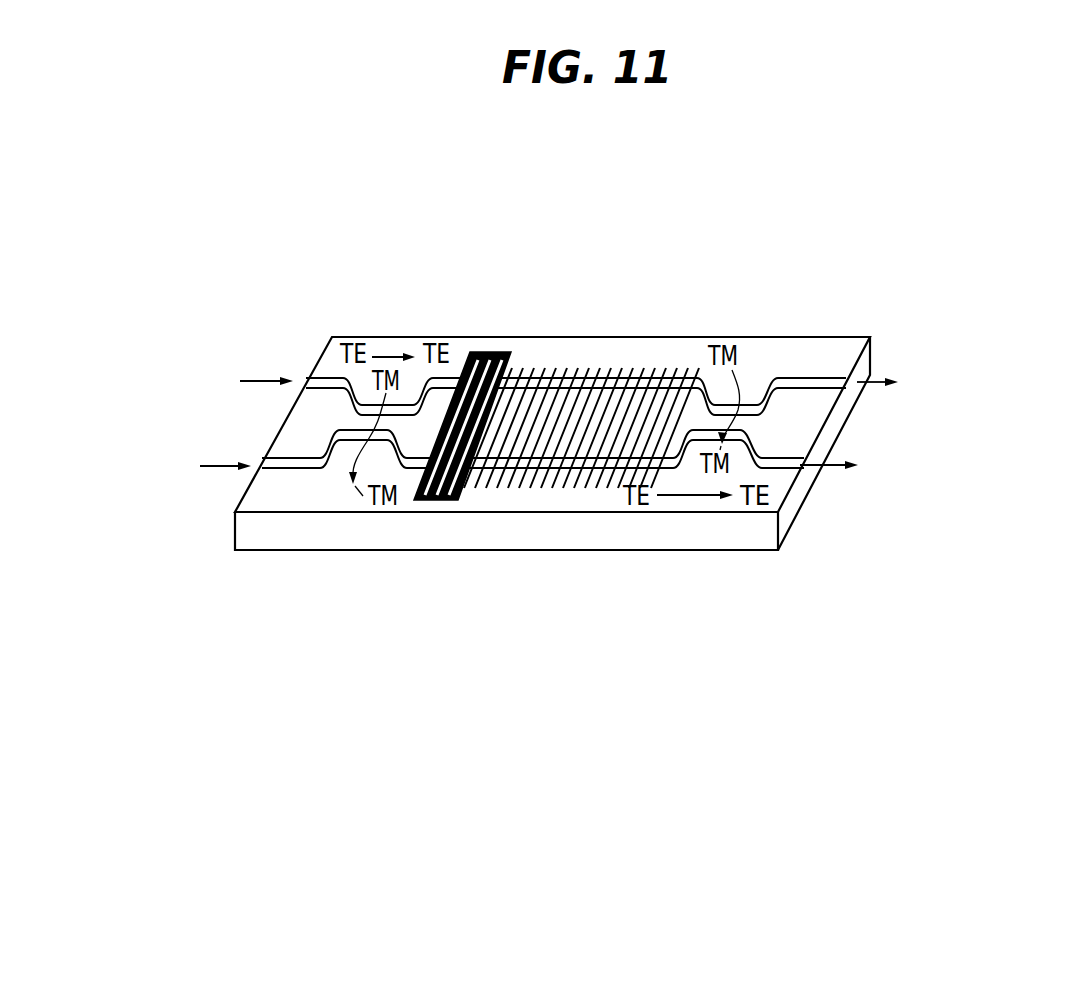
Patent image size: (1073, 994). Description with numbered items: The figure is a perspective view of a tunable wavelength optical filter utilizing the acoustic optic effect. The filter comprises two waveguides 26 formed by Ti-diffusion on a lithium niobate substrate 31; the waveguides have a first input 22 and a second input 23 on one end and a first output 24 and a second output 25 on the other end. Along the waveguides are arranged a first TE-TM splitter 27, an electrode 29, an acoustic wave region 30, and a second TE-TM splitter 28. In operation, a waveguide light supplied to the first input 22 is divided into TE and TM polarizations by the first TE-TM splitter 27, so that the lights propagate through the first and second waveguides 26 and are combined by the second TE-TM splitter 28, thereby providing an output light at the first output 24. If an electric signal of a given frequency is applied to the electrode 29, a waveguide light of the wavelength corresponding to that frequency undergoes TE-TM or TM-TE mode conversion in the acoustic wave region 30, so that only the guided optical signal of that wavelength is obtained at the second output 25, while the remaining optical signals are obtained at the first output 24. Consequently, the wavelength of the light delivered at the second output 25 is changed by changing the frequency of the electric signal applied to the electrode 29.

The first input 22 is at (309, 380).
The second input 23 is at (265, 467).
The first output 24 is at (858, 388).
The second output 25 is at (805, 468).
The waveguides 26 is at (826, 374).
The first TE-TM splitter 27 is at (390, 355).
The second TE-TM splitter 28 is at (763, 352).
The electrode 29 is at (497, 353).
The acoustic wave region 30 is at (612, 355).
The lithium niobate substrate 31 is at (512, 538).